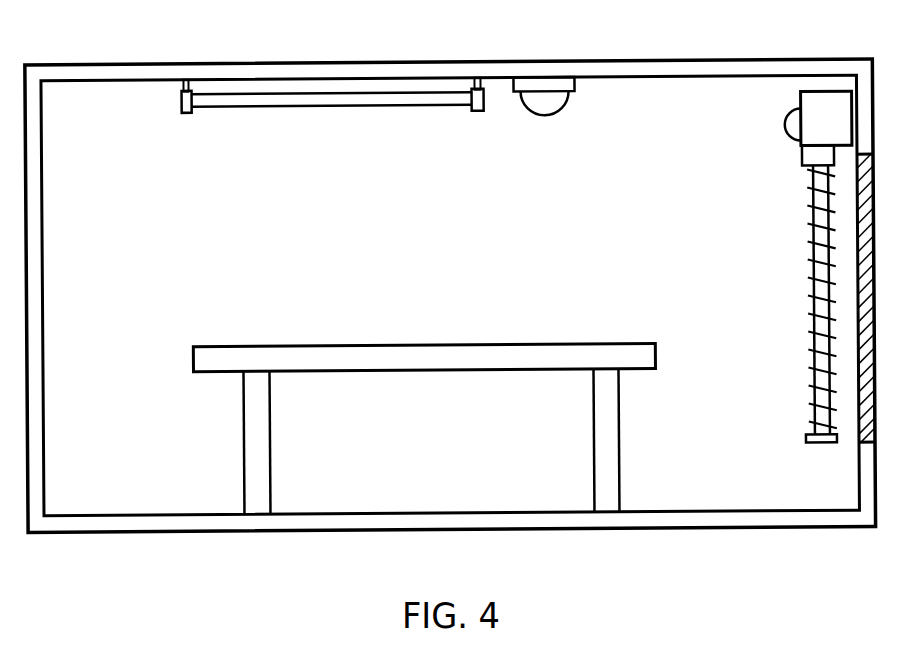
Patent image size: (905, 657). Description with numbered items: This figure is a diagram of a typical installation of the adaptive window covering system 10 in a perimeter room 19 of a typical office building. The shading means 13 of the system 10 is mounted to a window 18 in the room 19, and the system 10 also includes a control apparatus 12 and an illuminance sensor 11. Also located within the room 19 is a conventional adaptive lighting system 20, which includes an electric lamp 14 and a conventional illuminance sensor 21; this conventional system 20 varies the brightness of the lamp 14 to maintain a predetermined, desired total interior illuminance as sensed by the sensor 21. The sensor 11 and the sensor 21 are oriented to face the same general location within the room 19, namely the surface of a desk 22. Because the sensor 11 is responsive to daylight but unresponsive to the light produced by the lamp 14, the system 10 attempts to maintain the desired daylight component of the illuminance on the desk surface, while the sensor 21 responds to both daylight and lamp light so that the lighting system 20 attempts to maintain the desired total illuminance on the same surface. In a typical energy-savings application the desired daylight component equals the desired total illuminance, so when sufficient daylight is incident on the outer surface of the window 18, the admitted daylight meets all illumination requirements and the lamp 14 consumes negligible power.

The adaptive window covering system 10 is at (778, 264).
The illuminance sensor 11 is at (784, 136).
The control apparatus 12 is at (800, 100).
The shading means 13 is at (807, 303).
The electric lamp 14 is at (387, 110).
The window 18 is at (857, 428).
The perimeter room 19 is at (655, 61).
The conventional adaptive lighting system 20 is at (392, 139).
The conventional illuminance sensor 21 is at (545, 123).
The desk 22 is at (417, 341).